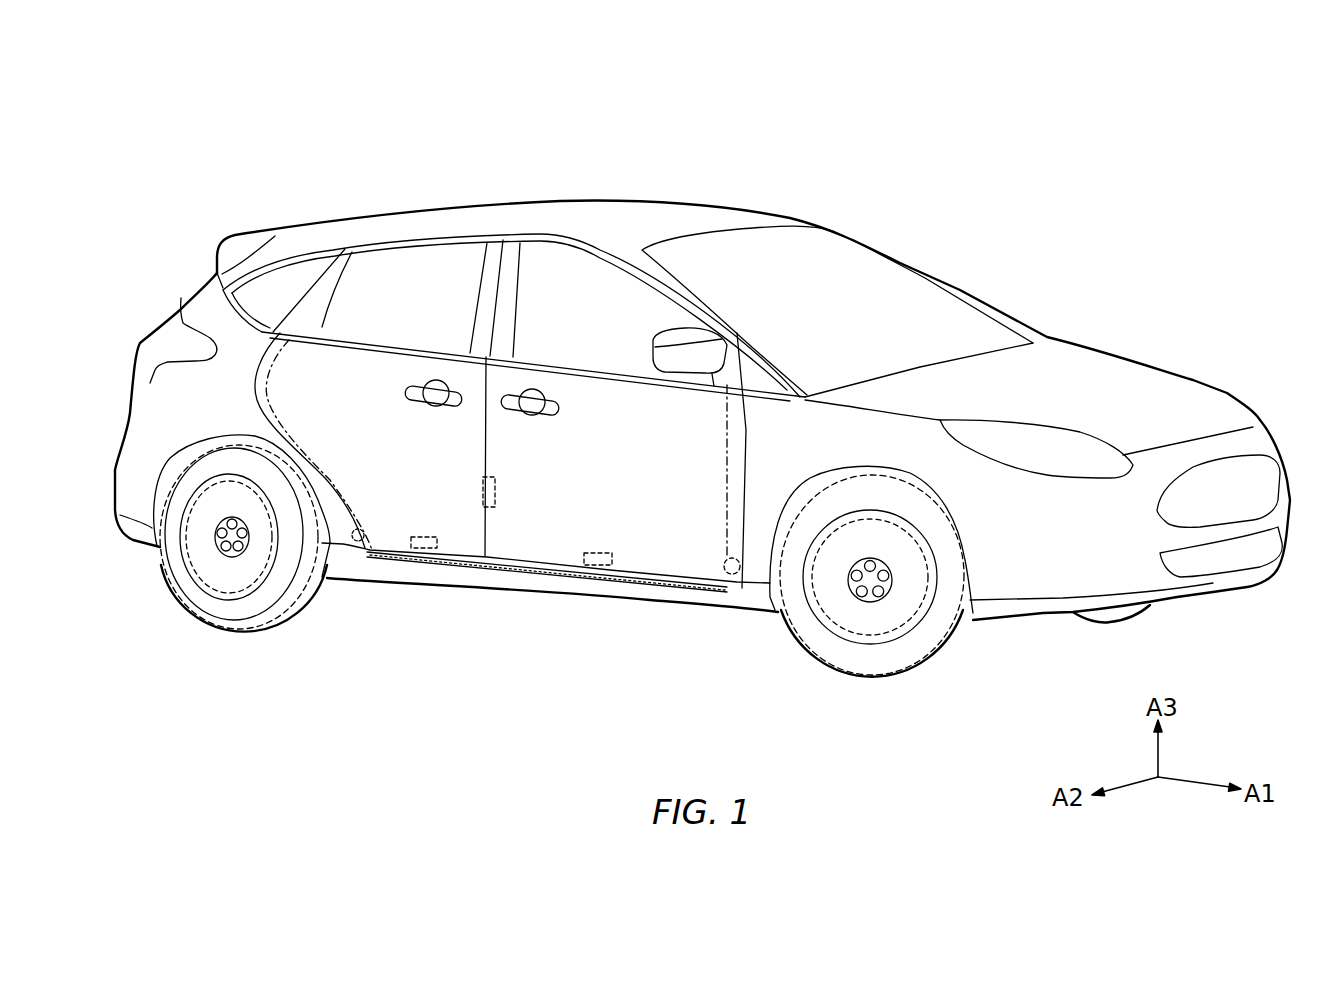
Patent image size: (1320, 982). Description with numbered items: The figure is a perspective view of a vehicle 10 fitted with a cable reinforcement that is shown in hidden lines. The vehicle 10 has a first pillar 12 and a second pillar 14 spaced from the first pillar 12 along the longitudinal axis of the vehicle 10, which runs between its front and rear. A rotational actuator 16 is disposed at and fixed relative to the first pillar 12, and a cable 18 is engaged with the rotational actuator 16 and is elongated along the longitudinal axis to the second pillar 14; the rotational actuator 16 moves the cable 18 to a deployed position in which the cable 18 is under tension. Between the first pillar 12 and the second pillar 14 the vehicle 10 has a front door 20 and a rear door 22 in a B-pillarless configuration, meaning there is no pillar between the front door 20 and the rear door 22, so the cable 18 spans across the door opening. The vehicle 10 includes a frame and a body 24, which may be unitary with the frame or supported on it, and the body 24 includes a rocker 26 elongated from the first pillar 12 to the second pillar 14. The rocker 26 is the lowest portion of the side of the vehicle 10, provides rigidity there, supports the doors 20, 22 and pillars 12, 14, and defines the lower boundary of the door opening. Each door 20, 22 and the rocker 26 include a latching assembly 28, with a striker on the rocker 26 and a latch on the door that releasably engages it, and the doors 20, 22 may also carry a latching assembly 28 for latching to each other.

The vehicle 10 is at (702, 439).
The first pillar 12 is at (735, 462).
The second pillar 14 is at (260, 416).
The rotational actuator 16 is at (722, 563).
The cable 18 is at (576, 590).
The front door 20 is at (637, 380).
The rear door 22 is at (373, 345).
The body 24 is at (667, 183).
The rocker 26 is at (447, 592).
The latching assembly 28 is at (428, 534).